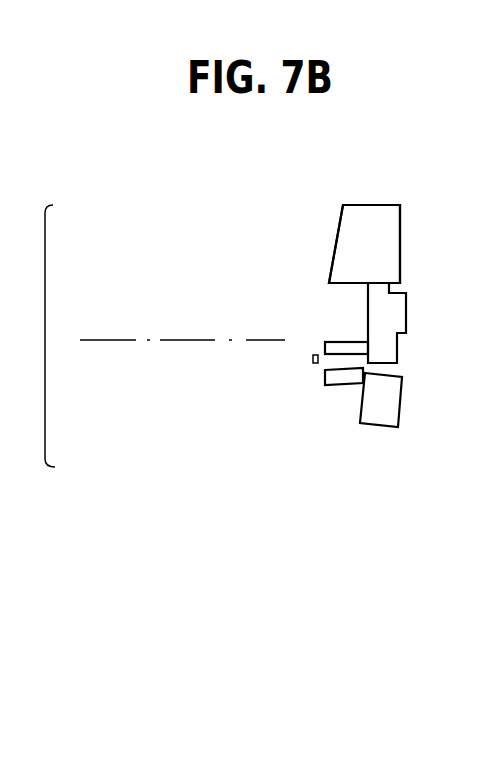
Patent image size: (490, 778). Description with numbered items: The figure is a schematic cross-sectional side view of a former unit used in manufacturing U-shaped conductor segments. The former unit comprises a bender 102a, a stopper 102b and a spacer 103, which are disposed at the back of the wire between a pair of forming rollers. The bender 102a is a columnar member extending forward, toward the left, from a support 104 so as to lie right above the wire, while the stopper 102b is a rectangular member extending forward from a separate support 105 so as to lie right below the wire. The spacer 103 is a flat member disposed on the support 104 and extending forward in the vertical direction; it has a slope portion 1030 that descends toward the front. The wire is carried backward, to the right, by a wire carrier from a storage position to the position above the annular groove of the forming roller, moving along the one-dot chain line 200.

The one-dot chain line 200 is at (183, 340).
The spacer 103 is at (345, 262).
The slope portion 1030 is at (337, 238).
The support 104 is at (388, 342).
The bender 102a is at (343, 345).
The stopper 102b is at (355, 380).
The support 105 is at (389, 407).